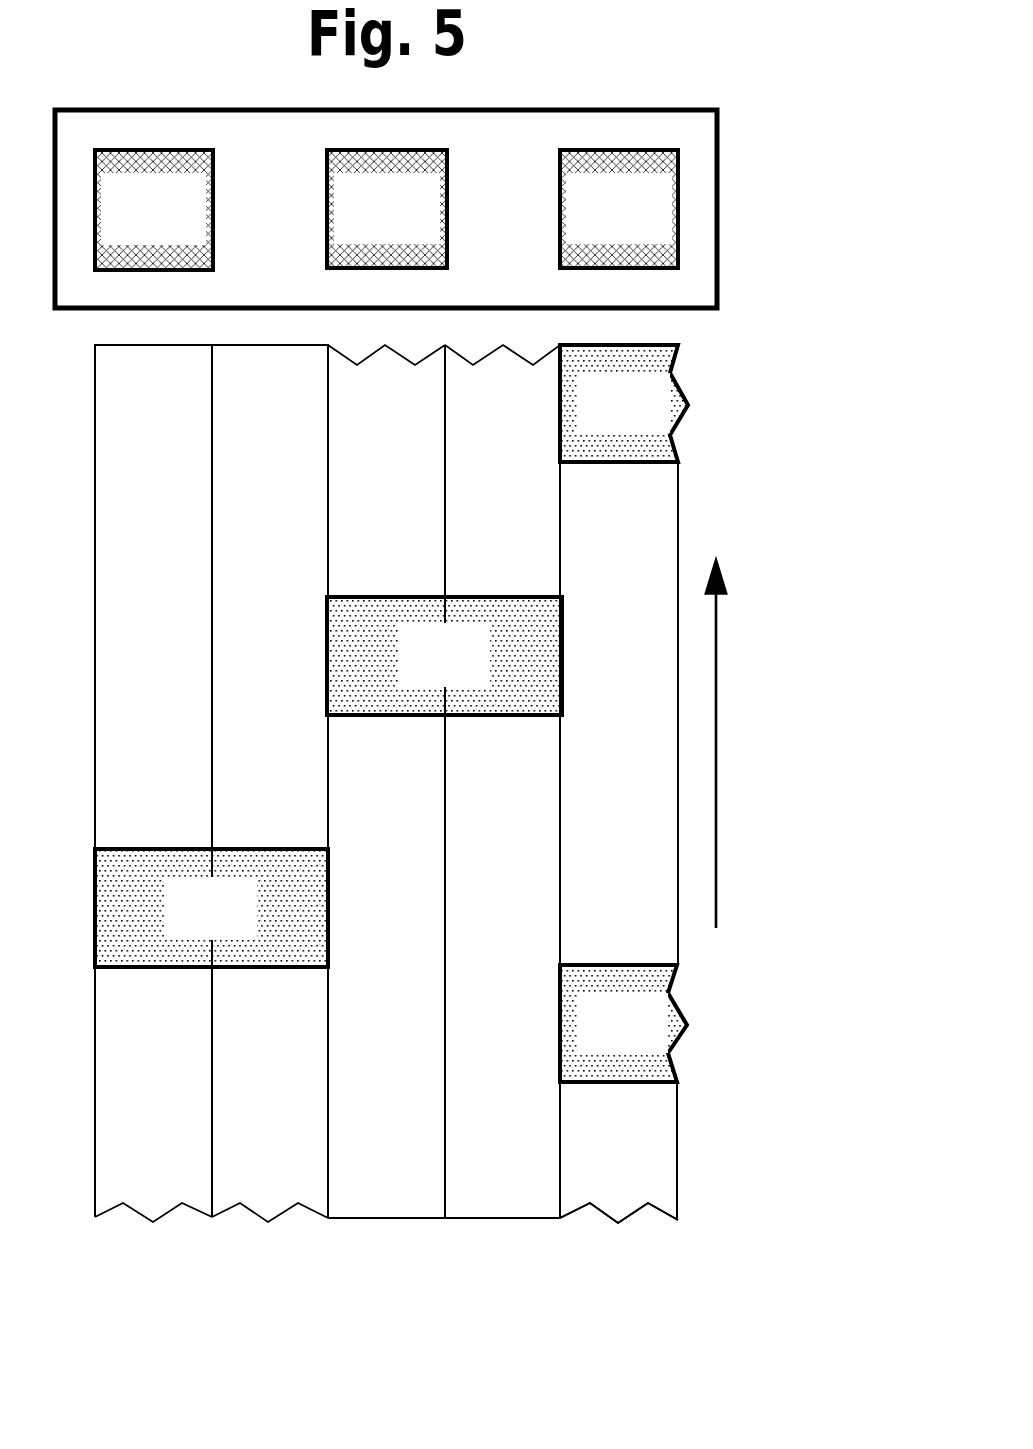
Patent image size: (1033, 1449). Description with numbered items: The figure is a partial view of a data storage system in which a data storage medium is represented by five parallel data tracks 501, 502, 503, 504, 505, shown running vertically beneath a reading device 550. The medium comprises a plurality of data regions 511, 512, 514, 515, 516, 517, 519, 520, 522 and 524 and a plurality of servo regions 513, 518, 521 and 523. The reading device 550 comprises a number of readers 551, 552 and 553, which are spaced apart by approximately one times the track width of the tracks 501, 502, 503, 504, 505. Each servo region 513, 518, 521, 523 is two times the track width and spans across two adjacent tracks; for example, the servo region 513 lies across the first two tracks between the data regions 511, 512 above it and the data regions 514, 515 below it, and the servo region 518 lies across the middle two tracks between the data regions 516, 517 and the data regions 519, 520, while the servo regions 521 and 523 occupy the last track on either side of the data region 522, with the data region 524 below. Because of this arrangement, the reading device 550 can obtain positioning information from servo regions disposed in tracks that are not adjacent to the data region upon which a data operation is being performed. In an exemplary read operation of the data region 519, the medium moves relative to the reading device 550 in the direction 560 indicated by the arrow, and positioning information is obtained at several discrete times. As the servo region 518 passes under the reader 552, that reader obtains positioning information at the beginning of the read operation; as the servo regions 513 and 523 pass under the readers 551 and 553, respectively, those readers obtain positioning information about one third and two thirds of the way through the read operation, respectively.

The reading device 550 is at (717, 110).
The reader 551 is at (154, 210).
The reader 552 is at (387, 209).
The reader 553 is at (619, 209).
The data track 501 is at (95, 1257).
The data track 502 is at (212, 1257).
The data track 503 is at (328, 1257).
The data track 504 is at (445, 1257).
The data track 505 is at (560, 1257).
The data region 511 is at (153, 597).
The data region 512 is at (270, 597).
The servo region 513 is at (211, 908).
The data region 514 is at (153, 1092).
The data region 515 is at (270, 1092).
The data region 516 is at (386, 471).
The data region 517 is at (502, 471).
The servo region 518 is at (444, 656).
The data region 519 is at (386, 966).
The data region 520 is at (502, 966).
The servo region 521 is at (624, 403).
The data region 522 is at (619, 713).
The servo region 523 is at (623, 1023).
The data region 524 is at (619, 1152).
The direction 560 is at (716, 788).